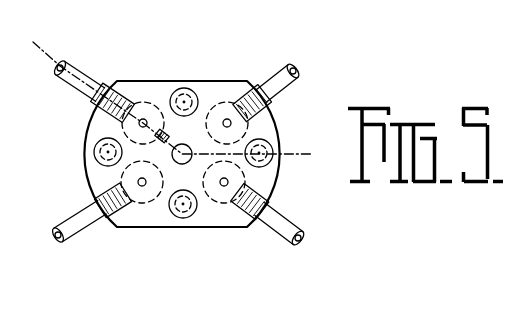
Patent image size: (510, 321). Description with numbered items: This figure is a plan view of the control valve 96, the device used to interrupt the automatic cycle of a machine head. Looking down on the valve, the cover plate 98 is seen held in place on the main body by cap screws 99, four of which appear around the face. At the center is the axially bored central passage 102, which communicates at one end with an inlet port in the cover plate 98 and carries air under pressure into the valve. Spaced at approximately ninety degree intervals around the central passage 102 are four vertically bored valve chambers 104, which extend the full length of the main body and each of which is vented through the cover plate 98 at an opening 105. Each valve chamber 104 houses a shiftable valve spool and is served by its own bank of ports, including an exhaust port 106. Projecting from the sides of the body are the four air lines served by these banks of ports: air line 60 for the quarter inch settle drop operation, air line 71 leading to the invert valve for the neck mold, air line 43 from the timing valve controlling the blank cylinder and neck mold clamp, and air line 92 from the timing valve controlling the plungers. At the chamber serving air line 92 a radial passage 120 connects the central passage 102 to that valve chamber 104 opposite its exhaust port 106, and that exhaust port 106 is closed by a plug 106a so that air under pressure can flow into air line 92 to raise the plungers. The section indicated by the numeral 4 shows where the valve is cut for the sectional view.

The section line 4- 4 is at (48, 22).
The air line 43 is at (299, 63).
The air line 60 is at (86, 229).
The air line 71 is at (303, 238).
The air line 92 is at (80, 67).
The control valve 96 is at (197, 232).
The cover plate 98 is at (297, 92).
The cap screws 99 is at (97, 143).
The central passage 102 is at (197, 137).
The valve chambers 104 is at (165, 100).
The openings 105 is at (143, 119).
The exhaust port 106 is at (159, 151).
The plug 106a is at (94, 96).
The radial passage 120 is at (160, 151).